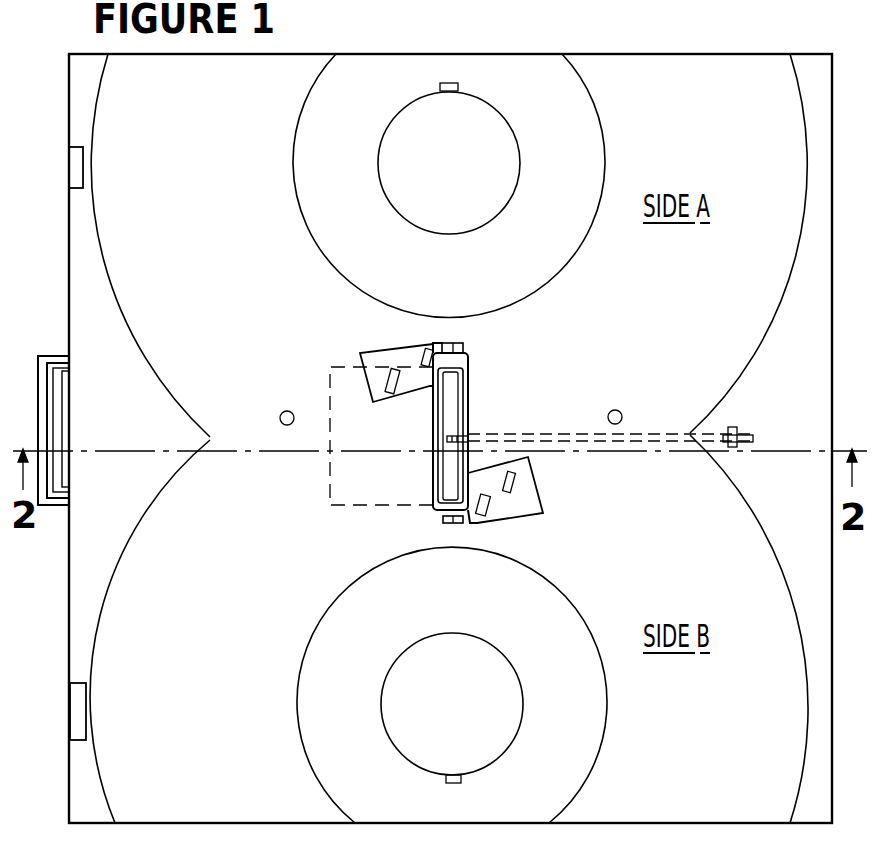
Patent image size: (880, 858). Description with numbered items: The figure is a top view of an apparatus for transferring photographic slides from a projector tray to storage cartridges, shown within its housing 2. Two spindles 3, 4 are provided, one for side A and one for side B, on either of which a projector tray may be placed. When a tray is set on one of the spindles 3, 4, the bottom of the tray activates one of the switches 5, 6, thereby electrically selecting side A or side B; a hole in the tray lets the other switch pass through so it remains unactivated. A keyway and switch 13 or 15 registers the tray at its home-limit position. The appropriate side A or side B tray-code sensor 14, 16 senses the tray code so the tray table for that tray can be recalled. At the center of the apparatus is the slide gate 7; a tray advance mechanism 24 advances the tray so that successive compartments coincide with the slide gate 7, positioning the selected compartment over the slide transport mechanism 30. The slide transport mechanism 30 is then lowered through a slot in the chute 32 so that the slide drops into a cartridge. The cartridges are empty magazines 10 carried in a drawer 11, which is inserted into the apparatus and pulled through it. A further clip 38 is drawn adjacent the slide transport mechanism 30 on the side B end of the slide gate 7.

The housing 2 is at (70, 248).
The spindle 3 is at (398, 127).
The spindle 4 is at (413, 668).
The switch 5 is at (289, 411).
The switch 6 is at (615, 410).
The slide gate 7 is at (453, 388).
The magazine 10 is at (55, 393).
The drawer 11 is at (40, 424).
The keyway and switch 13 is at (463, 342).
The tray-code sensor 14 is at (73, 160).
The keyway and switch 15 is at (448, 522).
The tray-code sensor 16 is at (75, 707).
The tray advance mechanism 24 is at (384, 372).
The slide transport mechanism 30 is at (492, 435).
The chute 32 is at (328, 478).
The lower clip 38 is at (517, 500).